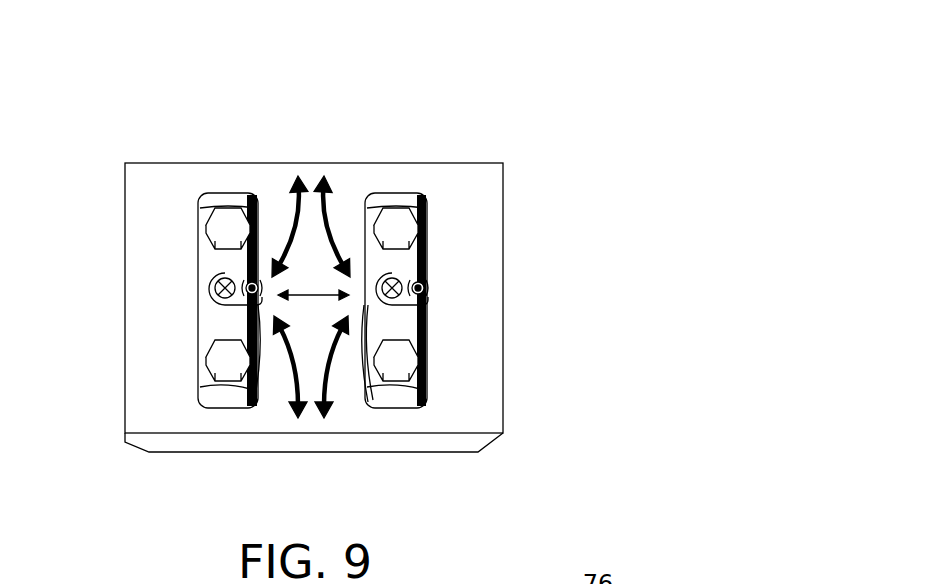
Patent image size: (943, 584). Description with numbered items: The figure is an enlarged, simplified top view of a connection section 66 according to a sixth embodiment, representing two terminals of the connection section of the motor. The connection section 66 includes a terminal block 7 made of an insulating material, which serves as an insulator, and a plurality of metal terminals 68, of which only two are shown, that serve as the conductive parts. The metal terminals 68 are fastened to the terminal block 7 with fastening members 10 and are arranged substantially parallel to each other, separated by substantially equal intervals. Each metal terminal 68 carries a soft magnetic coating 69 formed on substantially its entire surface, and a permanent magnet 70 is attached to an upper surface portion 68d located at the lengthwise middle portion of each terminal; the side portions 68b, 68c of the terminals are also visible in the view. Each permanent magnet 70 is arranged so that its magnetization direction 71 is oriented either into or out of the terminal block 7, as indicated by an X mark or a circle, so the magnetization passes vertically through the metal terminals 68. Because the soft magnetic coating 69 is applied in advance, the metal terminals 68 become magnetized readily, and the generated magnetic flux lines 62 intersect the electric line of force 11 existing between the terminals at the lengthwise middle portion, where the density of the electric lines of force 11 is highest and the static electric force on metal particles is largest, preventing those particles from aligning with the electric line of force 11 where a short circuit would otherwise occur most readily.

The connection section 66 is at (530, 68).
The terminal block 7 is at (495, 170).
The electric line of force 11 is at (303, 292).
The metal terminal 68 is at (203, 184).
The soft magnetic coating 69 is at (228, 196).
The magnetic flux line 62 is at (292, 220).
The fastening member 10 is at (227, 230).
The permanent magnet 70 is at (222, 278).
The upper surface portion 68d is at (222, 310).
The magnetization direction 71 is at (256, 308).
The side wall portion 68b is at (263, 308).
The side wall portion 68c is at (364, 308).